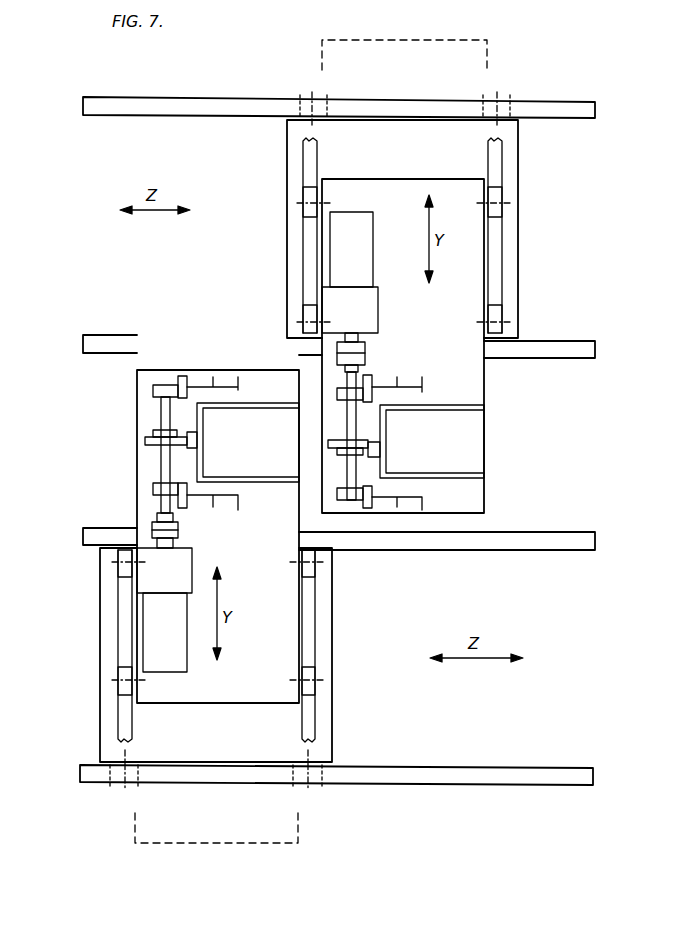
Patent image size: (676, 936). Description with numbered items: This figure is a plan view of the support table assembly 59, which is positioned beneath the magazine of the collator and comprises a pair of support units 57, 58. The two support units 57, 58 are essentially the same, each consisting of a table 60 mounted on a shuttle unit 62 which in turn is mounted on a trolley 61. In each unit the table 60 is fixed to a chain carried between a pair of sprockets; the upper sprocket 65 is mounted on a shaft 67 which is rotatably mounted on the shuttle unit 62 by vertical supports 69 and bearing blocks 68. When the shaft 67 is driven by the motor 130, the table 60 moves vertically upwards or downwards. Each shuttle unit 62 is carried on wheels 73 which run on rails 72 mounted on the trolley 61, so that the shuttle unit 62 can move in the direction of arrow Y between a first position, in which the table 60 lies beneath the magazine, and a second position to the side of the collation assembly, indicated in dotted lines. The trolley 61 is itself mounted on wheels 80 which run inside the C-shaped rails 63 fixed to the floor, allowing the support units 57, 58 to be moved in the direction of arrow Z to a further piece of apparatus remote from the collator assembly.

The support unit 57 is at (88, 618).
The support unit 58 is at (527, 211).
The support table assembly 59 is at (98, 231).
The table 60 is at (473, 437).
The trolley 61 is at (406, 130).
The shuttle unit 62 is at (455, 279).
The "C" shaped rails 63 is at (567, 110).
The sprocket 65 is at (357, 443).
The shaft 67 is at (352, 378).
The bearing blocks 68 is at (352, 397).
The vertical supports 69 is at (430, 382).
The rails 72 is at (317, 155).
The wheels 73 is at (305, 193).
The wheels 80 is at (305, 100).
The motor 130 is at (358, 225).